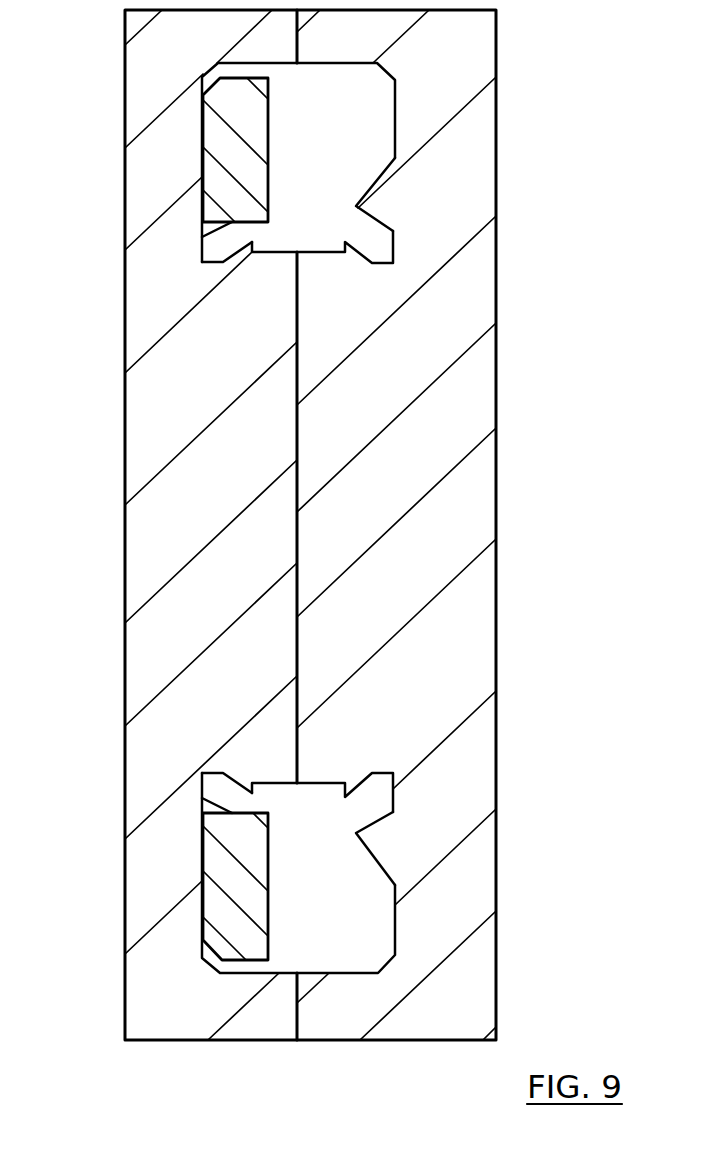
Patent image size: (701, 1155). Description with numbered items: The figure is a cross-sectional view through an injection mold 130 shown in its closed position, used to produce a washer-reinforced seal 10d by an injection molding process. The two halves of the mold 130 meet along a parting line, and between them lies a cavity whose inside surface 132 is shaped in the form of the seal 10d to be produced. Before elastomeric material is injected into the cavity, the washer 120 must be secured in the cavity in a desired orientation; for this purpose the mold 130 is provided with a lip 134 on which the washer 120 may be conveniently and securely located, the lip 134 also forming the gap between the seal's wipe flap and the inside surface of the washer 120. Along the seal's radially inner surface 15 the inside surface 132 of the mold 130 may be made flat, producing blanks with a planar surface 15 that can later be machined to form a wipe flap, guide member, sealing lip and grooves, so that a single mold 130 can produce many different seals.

The injection mold 130 is at (125, 691).
The radially inner surface 15 is at (321, 268).
The seal 10d is at (355, 150).
The inside surface of the mold cavity 132 is at (368, 186).
The lip 134 is at (204, 236).
The washer 120 is at (257, 113).